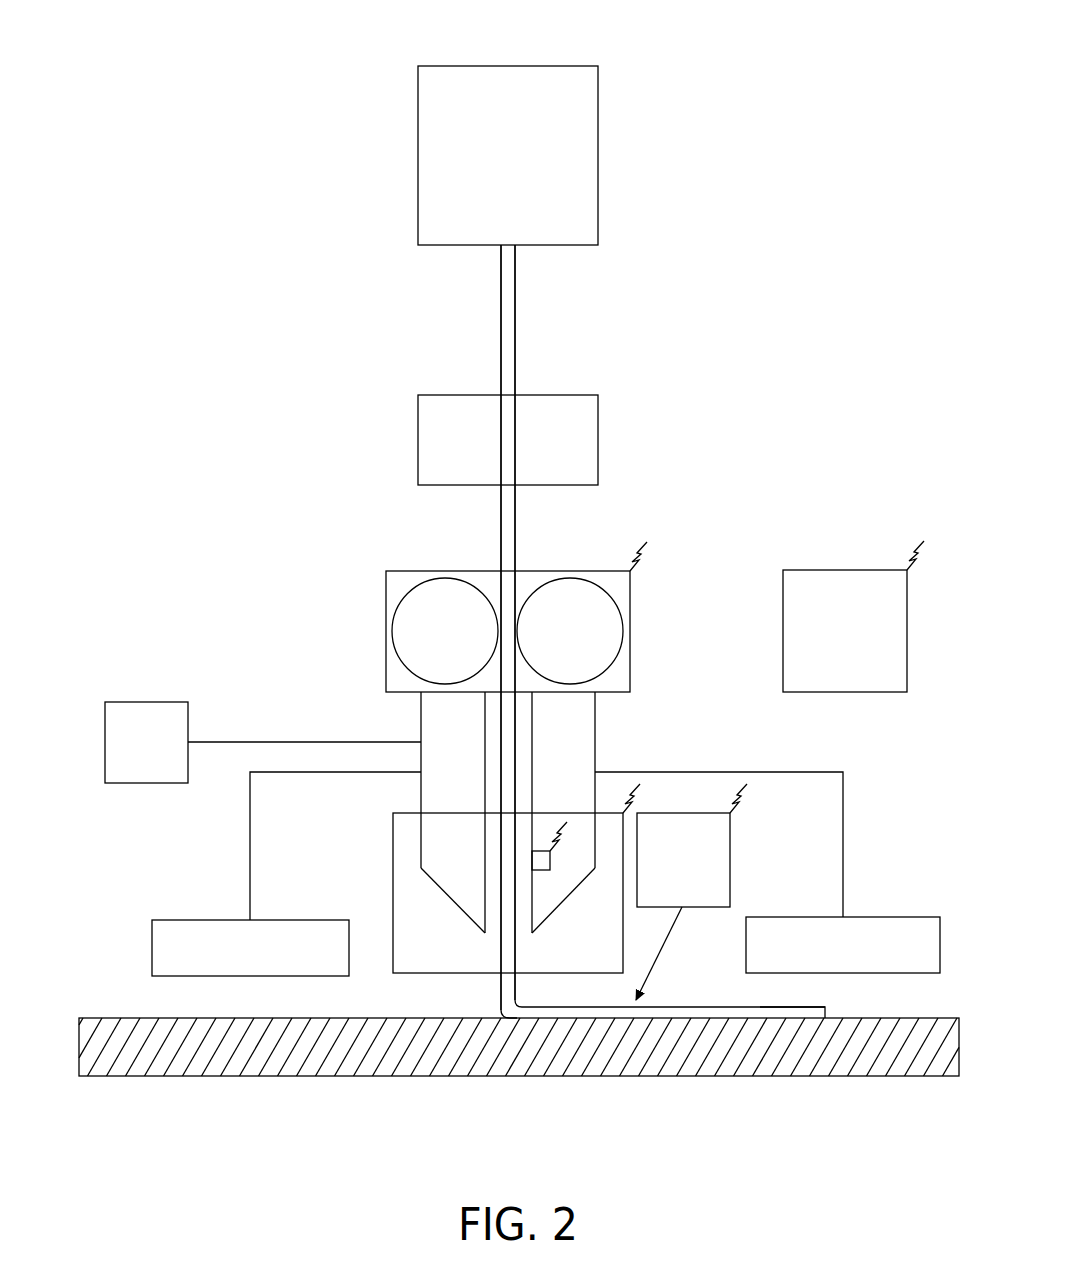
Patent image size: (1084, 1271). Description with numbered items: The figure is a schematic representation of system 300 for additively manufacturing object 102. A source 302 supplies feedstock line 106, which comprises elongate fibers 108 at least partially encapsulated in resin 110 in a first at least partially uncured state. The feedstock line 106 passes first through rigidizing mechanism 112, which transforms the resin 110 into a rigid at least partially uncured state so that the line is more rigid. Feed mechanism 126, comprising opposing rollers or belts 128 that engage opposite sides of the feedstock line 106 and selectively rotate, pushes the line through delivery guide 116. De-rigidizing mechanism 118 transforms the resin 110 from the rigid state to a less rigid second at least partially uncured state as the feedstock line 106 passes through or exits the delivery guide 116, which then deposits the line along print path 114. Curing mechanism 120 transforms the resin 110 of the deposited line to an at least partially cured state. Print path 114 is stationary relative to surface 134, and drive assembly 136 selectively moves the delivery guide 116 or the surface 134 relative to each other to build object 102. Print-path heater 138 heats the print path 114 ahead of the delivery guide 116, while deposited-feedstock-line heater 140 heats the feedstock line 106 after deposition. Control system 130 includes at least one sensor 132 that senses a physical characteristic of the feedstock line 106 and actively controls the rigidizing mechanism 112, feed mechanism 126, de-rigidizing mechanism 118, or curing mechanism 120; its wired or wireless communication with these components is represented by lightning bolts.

The system 300 is at (786, 36).
The source 302 is at (518, 66).
The feedstock line 106 is at (499, 268).
The resin 110 is at (500, 318).
The elongate fibers 108 is at (500, 366).
The rigidizing mechanism 112 is at (598, 437).
The feed mechanism 126 is at (386, 612).
The opposing rollers or belts 128 is at (557, 579).
The control system 130 is at (840, 570).
The drive assembly 136 is at (153, 702).
The delivery guide 116 is at (595, 737).
The de-rigidizing mechanism 118 is at (393, 889).
The sensor 132 is at (550, 862).
The curing mechanism 120 is at (730, 848).
The print-path heater 138 is at (195, 920).
The deposited-feedstock-line heater 140 is at (857, 917).
The print path 114 is at (690, 1018).
The object 102 is at (810, 999).
The surface 134 is at (125, 1015).